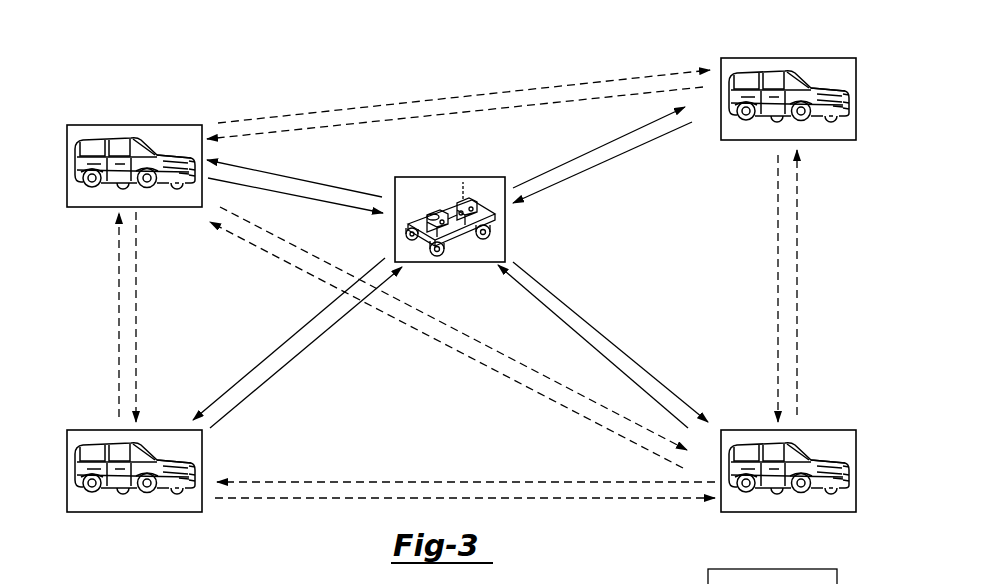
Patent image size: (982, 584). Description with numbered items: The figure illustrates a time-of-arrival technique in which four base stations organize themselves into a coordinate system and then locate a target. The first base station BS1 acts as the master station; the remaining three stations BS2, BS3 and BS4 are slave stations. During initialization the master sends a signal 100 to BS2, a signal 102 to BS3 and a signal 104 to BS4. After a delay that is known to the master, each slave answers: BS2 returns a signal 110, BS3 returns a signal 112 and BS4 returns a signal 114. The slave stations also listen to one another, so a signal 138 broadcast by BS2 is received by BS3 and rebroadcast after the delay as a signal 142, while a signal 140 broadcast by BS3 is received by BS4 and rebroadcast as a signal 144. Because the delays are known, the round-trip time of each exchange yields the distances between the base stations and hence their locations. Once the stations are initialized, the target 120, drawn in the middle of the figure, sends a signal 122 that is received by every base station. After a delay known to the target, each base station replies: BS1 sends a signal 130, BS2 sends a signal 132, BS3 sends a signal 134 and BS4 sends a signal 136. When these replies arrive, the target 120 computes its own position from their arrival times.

The base station 1 BS1 is at (113, 125).
The slave base station BS2 is at (128, 513).
The slave base station BS3 is at (828, 430).
The slave base station BS4 is at (803, 58).
The signal 100 is at (136, 315).
The signal 110 is at (119, 315).
The signal 102 is at (458, 328).
The signal 112 is at (458, 350).
The signal 104 is at (527, 90).
The signal 114 is at (483, 113).
The target 120 is at (505, 227).
The signal 122 is at (450, 267).
The signal 130 is at (302, 207).
The signal 132 is at (308, 347).
The signal 134 is at (575, 335).
The signal 136 is at (600, 165).
The signal 138 is at (297, 500).
The signal 142 is at (422, 480).
The signal 140 is at (797, 258).
The signal 144 is at (778, 277).